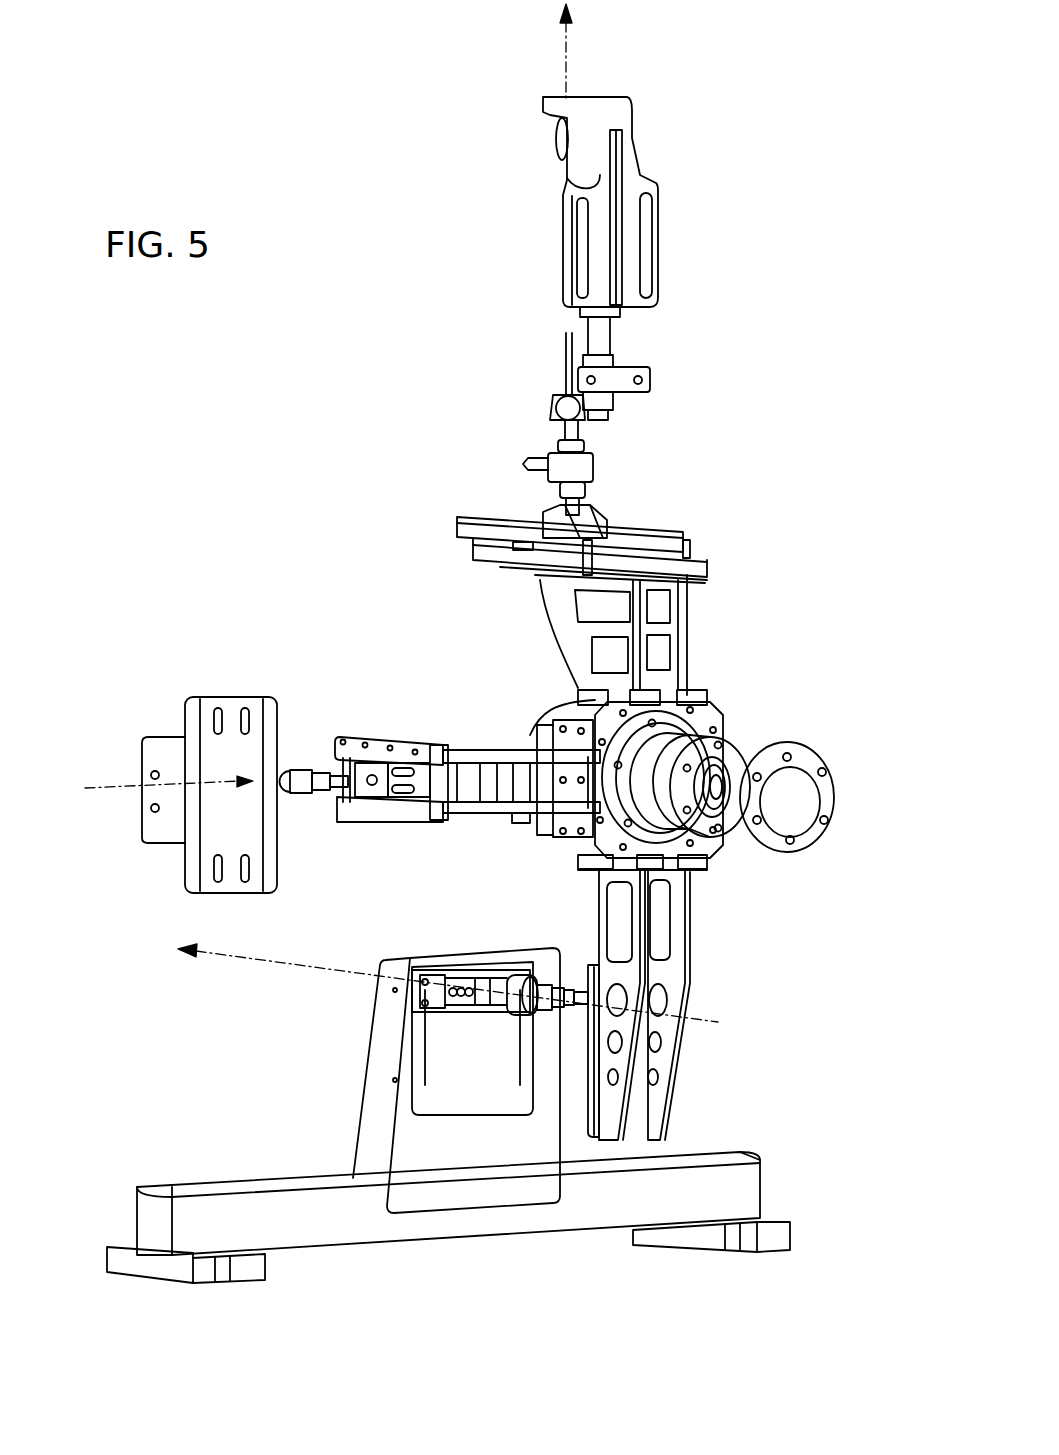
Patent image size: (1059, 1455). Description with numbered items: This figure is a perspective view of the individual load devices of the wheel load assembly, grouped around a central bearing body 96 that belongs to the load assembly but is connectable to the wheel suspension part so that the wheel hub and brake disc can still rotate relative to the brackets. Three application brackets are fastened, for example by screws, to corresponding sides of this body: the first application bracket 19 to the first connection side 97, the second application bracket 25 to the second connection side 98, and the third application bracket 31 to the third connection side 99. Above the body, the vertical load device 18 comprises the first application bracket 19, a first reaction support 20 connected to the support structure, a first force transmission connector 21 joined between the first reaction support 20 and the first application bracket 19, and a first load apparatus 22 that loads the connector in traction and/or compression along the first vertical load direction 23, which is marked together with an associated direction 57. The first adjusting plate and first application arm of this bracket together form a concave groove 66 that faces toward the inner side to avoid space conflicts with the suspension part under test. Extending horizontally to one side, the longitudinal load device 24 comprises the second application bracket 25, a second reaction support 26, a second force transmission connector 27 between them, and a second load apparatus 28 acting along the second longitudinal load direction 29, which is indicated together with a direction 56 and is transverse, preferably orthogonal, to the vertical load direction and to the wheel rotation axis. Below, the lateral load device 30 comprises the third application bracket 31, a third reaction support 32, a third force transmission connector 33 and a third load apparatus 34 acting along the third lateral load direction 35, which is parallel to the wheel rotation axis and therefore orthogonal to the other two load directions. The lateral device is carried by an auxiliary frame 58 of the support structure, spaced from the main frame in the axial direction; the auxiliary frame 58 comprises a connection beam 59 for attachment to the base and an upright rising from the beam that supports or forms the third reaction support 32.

The vertical load device 18 is at (405, 365).
The first application bracket 19 is at (585, 598).
The first reaction support 20 is at (613, 382).
The first force transmission connector 21 is at (583, 435).
The first load apparatus 22 is at (568, 170).
The first vertical load direction 23 is at (655, 52).
The vertical direction 57 is at (572, 52).
The longitudinal load device 24 is at (400, 722).
The second application bracket 25 is at (495, 748).
The second reaction support 26 is at (216, 697).
The second force transmission connector 27 is at (315, 797).
The second load apparatus 28 is at (298, 798).
The second longitudinal load direction 29 is at (122, 778).
The horizontal axis 56 is at (152, 733).
The lateral load device 30 is at (721, 1028).
The third application bracket 31 is at (688, 950).
The third reaction support 32 is at (415, 993).
The third force transmission connector 33 is at (527, 1012).
The third load apparatus 34 is at (567, 1014).
The third lateral load direction 35 is at (240, 962).
The auxiliary frame 58 is at (438, 1143).
The connection beam 59 is at (582, 1197).
The concave groove 66 is at (580, 628).
The bearing body 96 is at (697, 725).
The first connection side 97 is at (585, 708).
The second connection side 98 is at (592, 743).
The third connection side 99 is at (650, 853).